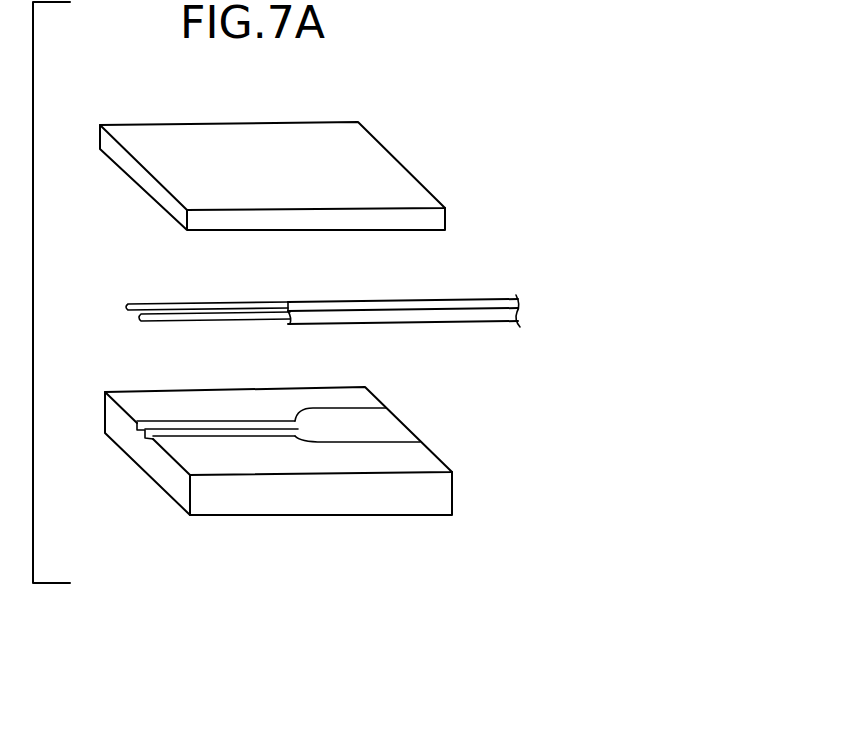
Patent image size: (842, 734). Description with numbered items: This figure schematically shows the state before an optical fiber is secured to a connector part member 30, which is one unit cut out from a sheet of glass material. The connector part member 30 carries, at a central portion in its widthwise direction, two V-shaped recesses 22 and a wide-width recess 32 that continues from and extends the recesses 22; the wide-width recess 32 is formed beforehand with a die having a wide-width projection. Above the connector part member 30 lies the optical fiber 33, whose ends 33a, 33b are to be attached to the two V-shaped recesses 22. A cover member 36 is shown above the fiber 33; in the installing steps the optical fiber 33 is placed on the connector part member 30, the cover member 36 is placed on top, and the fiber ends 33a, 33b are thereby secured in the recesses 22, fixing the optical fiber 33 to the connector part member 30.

The V-shaped recess 22 is at (153, 439).
The connector part member 30 is at (338, 495).
The wide-width recess 32 is at (385, 430).
The optical fiber 33 is at (487, 317).
The end of the optical fiber 33a is at (147, 304).
The end of the optical fiber 33b is at (178, 322).
The cover member 36 is at (372, 160).